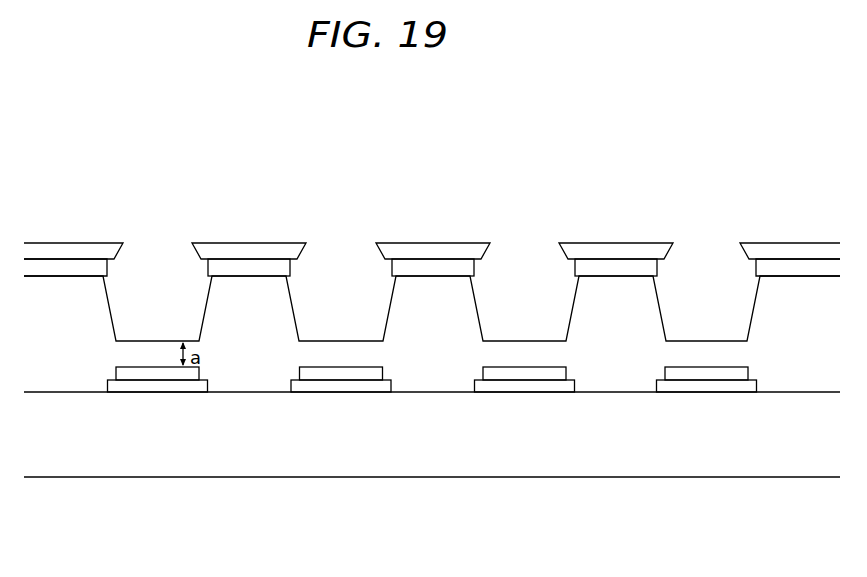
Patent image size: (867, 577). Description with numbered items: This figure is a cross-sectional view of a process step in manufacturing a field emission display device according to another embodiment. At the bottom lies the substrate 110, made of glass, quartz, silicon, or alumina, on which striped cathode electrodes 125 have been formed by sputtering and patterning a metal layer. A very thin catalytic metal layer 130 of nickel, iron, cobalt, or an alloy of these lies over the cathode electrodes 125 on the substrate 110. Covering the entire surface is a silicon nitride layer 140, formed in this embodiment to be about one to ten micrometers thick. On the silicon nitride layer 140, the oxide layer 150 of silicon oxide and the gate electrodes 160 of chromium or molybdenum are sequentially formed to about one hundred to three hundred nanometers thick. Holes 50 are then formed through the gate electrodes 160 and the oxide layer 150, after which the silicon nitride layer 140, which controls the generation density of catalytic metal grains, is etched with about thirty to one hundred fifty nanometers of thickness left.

The holes 50 is at (432, 257).
The gate electrodes 160 is at (257, 252).
The oxide layer 150 is at (432, 268).
The cathode electrodes 125 is at (325, 385).
The catalytic metal layer 130 is at (356, 387).
The silicon nitride layer 140 is at (620, 373).
The substrate 110 is at (701, 460).